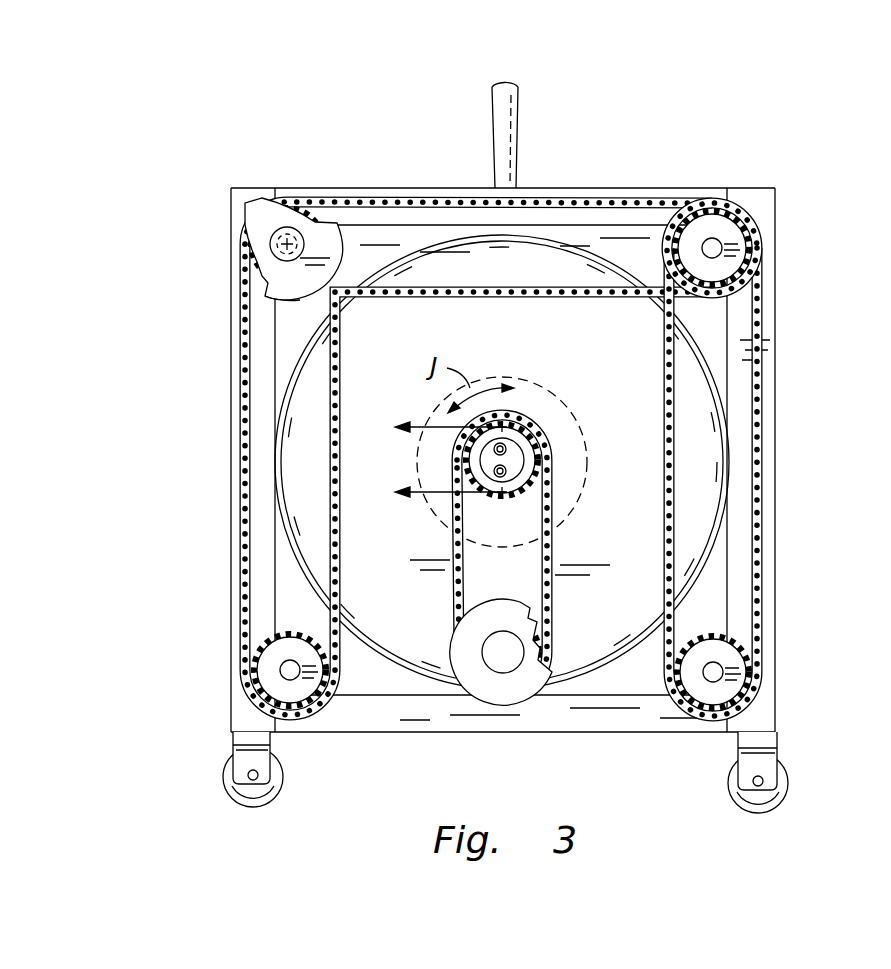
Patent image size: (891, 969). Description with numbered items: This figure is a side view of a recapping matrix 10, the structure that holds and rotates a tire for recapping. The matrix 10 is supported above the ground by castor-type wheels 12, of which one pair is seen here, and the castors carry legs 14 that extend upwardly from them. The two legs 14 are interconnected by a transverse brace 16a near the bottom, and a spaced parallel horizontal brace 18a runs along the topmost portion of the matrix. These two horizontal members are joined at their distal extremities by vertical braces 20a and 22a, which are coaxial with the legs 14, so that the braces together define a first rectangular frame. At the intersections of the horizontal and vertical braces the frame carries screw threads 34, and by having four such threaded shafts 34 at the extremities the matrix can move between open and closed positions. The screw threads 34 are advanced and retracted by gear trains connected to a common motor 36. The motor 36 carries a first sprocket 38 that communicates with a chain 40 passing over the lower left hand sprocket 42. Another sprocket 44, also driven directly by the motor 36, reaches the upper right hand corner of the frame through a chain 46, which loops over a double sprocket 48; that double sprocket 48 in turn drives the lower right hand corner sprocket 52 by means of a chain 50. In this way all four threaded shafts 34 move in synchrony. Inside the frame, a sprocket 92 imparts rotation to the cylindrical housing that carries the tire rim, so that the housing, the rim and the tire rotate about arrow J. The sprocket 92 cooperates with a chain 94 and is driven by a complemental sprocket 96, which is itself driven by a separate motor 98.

The matrix 10 is at (700, 149).
The castor-type wheels 12 is at (237, 790).
The legs 14 is at (245, 748).
The transverse brace 16a is at (450, 720).
The horizontal brace 18a is at (473, 193).
The vertical brace 20a is at (231, 522).
The vertical brace 22a is at (776, 496).
The screw threads 34 is at (283, 227).
The motor 36 is at (287, 290).
The first sprocket 38 is at (262, 254).
The chain 40 is at (244, 385).
The lower left hand sprocket 42 is at (270, 655).
The sprocket 44 is at (303, 217).
The chain 46 is at (547, 197).
The double sprocket 48 is at (735, 257).
The chain 50 is at (760, 548).
The lower right hand corner sprocket 52 is at (740, 655).
The sprocket 92 is at (523, 445).
The chain 94 is at (553, 562).
The complemental sprocket 96 is at (540, 632).
The motor 98 is at (470, 652).